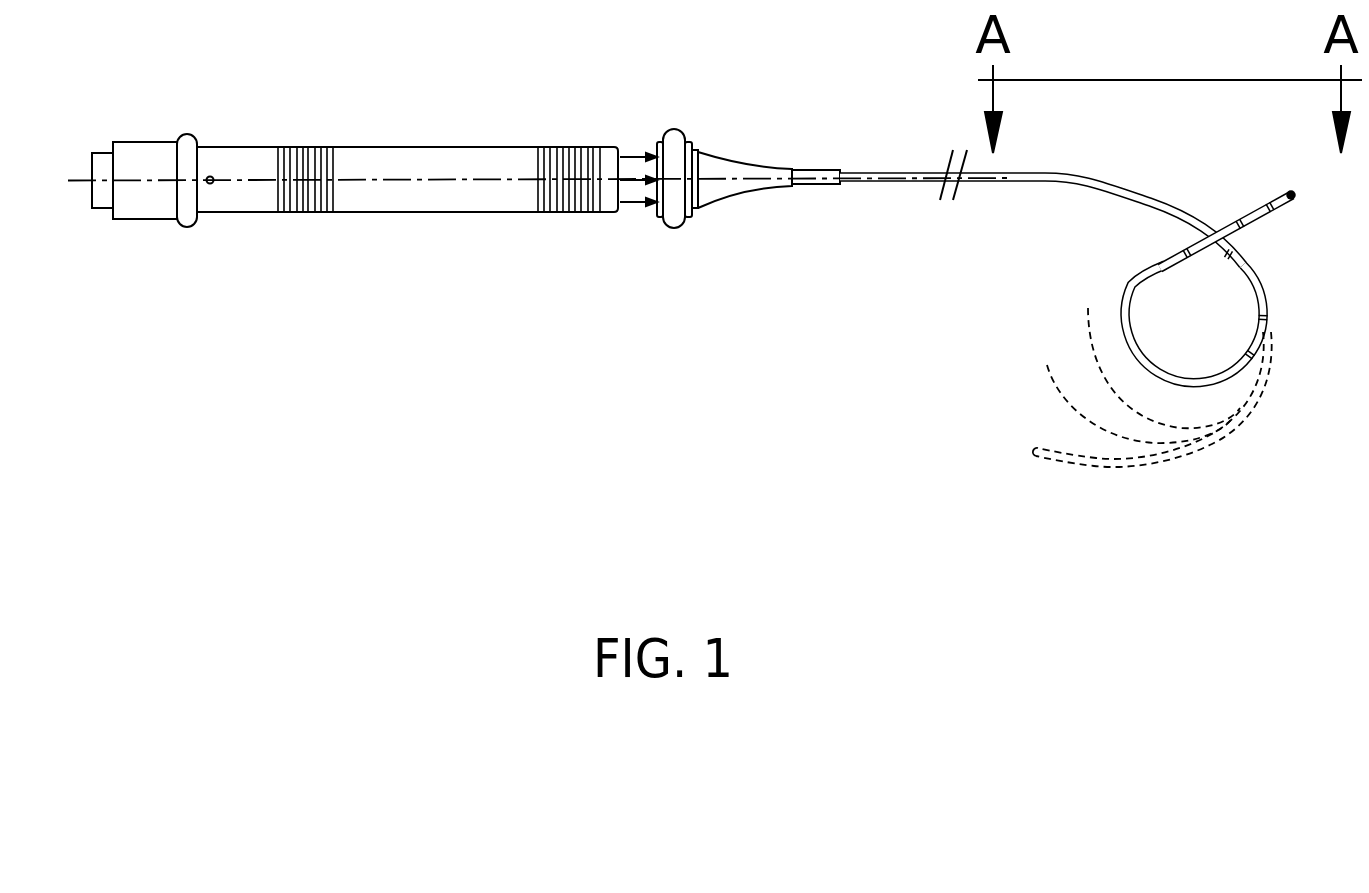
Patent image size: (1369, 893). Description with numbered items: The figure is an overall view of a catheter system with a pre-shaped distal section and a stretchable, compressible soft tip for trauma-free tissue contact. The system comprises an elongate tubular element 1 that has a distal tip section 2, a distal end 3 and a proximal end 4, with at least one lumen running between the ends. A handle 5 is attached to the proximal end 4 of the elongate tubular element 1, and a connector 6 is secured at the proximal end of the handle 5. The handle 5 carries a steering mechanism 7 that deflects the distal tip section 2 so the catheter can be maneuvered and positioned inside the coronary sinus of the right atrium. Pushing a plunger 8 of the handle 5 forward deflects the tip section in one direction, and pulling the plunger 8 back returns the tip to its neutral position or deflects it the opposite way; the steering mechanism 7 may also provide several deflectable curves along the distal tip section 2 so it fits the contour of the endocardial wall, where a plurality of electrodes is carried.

The elongate tubular element 1 is at (967, 195).
The distal tip section 2 is at (1137, 312).
The distal end 3 is at (1288, 183).
The proximal end 4 is at (793, 165).
The handle 5 is at (362, 142).
The connector 6 is at (143, 228).
The steering mechanism 7 is at (637, 222).
The plunger 8 is at (680, 238).